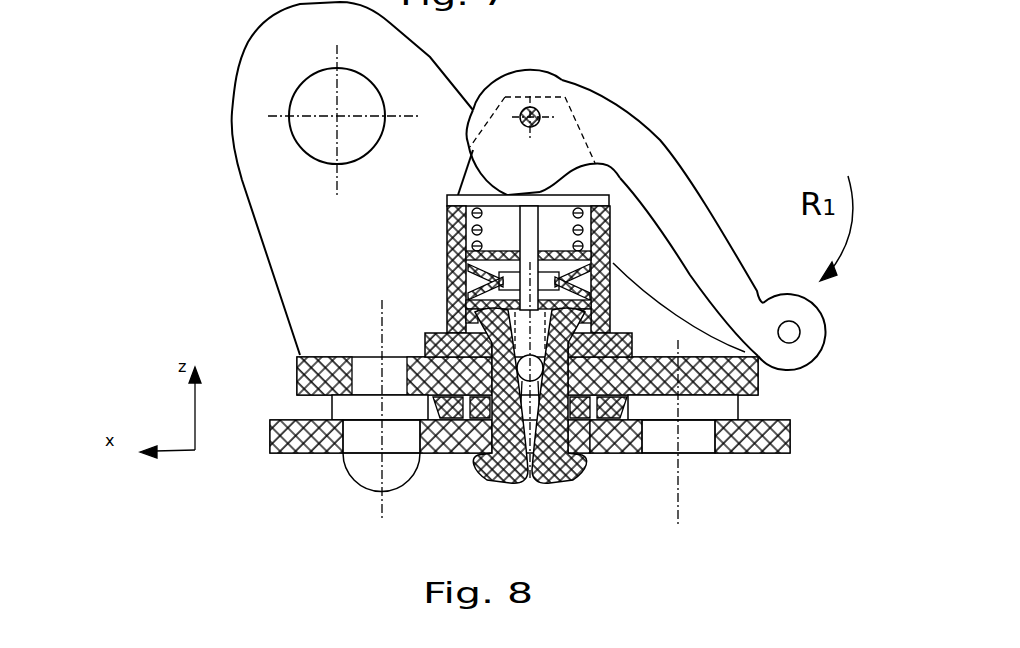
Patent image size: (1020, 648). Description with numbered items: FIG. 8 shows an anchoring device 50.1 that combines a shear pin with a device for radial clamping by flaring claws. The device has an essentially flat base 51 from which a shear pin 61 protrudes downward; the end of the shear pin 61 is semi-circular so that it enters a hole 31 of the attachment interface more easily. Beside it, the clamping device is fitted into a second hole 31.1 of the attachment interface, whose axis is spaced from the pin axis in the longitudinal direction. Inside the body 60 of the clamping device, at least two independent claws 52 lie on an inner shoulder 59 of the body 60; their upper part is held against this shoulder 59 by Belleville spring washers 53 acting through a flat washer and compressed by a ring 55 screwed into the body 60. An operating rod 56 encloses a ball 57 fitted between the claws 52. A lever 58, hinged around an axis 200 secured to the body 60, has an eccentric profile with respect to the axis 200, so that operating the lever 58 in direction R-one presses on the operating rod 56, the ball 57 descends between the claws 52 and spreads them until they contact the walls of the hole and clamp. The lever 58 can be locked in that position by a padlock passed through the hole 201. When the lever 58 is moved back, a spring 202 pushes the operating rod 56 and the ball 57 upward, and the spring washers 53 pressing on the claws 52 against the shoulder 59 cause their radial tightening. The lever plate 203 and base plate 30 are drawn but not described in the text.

The anchoring device 50.1 is at (188, 161).
The lever plate 203 is at (278, 55).
The axis 200 is at (533, 107).
The operating rod 56 is at (637, 147).
The lever 58 is at (652, 125).
The hole 201 is at (792, 329).
The spring 202 is at (447, 213).
The body 60 is at (615, 251).
The spring washers 53 is at (460, 278).
The ring 55 is at (523, 247).
The claws 52 is at (510, 485).
The second hole 31.1 is at (533, 484).
The ball 57 is at (465, 455).
The base 51 is at (290, 420).
The base plate 30 is at (775, 420).
The inner shoulder 59 is at (600, 455).
The hole 31 is at (660, 437).
The shear pin 61 is at (363, 450).